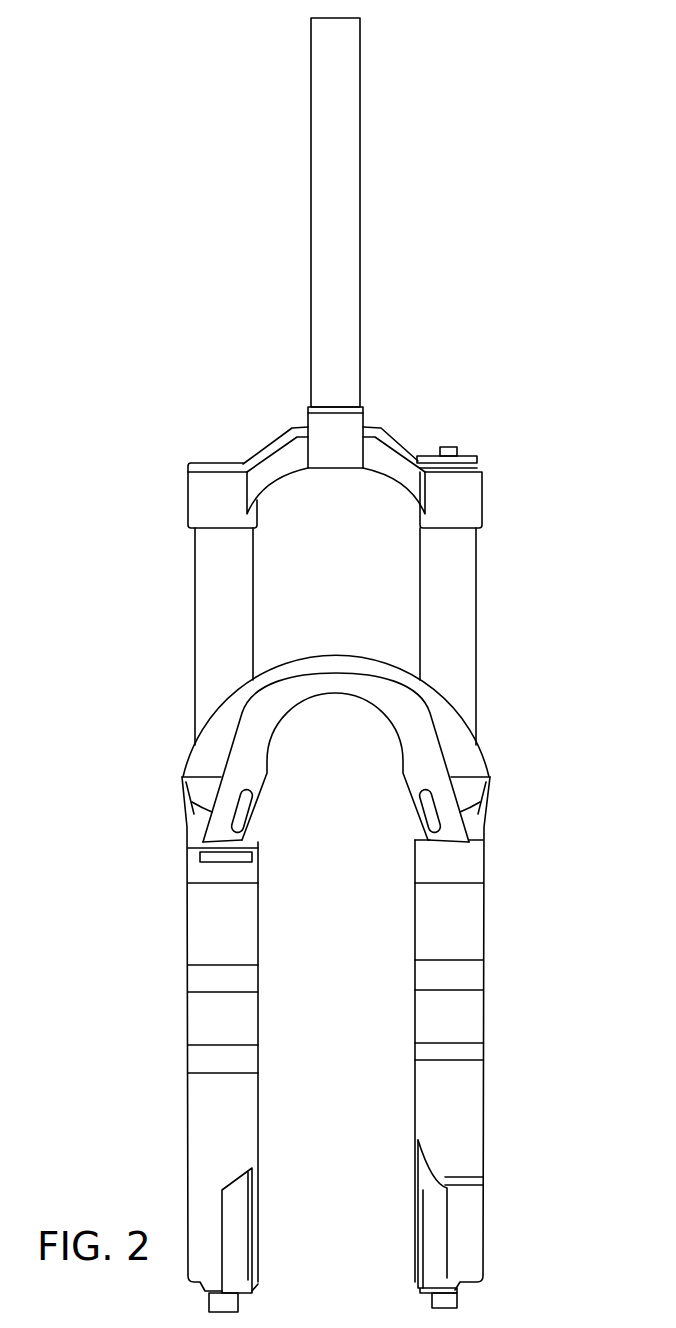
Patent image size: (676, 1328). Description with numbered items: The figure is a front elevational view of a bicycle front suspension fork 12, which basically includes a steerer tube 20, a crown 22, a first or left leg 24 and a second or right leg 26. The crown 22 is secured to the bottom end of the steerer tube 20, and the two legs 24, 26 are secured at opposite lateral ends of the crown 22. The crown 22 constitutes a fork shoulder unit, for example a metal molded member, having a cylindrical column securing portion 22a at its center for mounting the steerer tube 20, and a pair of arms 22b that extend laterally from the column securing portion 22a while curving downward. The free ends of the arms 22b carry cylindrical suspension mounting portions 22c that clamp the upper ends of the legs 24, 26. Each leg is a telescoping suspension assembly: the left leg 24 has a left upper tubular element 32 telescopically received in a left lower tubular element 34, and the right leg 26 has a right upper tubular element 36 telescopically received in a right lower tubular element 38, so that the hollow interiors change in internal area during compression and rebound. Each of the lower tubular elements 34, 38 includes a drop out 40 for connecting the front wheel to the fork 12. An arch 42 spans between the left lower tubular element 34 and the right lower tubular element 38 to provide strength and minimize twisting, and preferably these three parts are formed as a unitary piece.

The front suspension fork 12 is at (120, 267).
The steerer tube 20 is at (361, 209).
The crown 22 is at (400, 429).
The column securing portion 22a is at (333, 469).
The arms 22b is at (286, 477).
The suspension mounting portions 22c is at (210, 503).
The first or left leg 24 is at (577, 930).
The second or right leg 26 is at (97, 698).
The left upper tubular element 32 is at (477, 712).
The left lower tubular element 34 is at (484, 921).
The right upper tubular element 36 is at (195, 713).
The right lower tubular element 38 is at (188, 925).
The drop out 40 is at (435, 1223).
The arch 42 is at (334, 694).